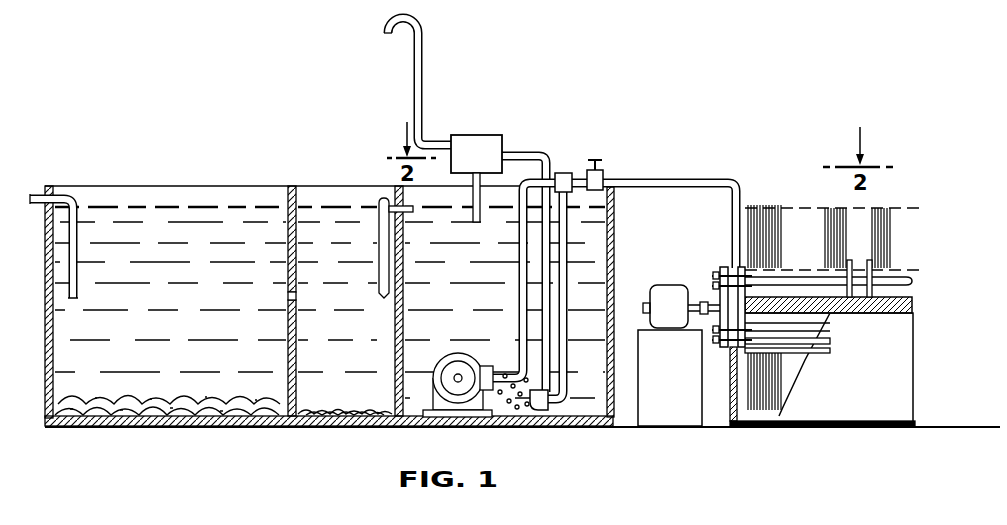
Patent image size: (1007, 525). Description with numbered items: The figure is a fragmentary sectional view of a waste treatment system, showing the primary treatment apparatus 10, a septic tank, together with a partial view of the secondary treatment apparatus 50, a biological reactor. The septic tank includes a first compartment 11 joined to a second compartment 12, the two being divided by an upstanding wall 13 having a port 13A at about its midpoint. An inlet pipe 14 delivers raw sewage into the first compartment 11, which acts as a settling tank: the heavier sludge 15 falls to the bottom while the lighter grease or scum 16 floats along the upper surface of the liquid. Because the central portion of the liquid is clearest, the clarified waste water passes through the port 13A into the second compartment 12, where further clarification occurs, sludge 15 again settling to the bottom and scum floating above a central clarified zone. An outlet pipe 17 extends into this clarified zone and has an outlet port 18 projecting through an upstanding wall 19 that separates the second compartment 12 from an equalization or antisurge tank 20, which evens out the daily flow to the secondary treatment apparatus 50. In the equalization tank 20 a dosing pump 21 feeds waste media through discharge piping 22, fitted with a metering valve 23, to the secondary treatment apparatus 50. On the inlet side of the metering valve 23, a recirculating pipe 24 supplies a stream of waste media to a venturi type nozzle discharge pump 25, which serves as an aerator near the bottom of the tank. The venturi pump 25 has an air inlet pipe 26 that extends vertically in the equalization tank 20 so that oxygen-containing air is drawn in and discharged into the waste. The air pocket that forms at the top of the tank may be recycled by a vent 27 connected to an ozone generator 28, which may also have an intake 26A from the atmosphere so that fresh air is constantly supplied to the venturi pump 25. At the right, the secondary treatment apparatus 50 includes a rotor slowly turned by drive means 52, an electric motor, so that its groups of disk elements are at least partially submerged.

The primary treatment apparatus 10 is at (250, 158).
The first compartment 11 is at (72, 322).
The second compartment 12 is at (345, 208).
The upstanding wall 13 is at (289, 353).
The port 13A is at (289, 316).
The inlet pipe 14 is at (40, 208).
The sludge 15 is at (128, 420).
The scum 16 is at (192, 206).
The outlet pipe 17 is at (385, 205).
The outlet port 18 is at (412, 206).
The upstanding wall 19 is at (395, 356).
The equalization tank 20 is at (465, 309).
The dosing pump 21 is at (445, 365).
The discharge piping 22 is at (520, 330).
The metering valve 23 is at (601, 182).
The recirculating pipe 24 is at (567, 392).
The venturi type nozzle discharge pump 25 is at (545, 410).
The air inlet pipe 26 is at (550, 310).
The intake 26A is at (422, 34).
The vent 27 is at (482, 203).
The ozone generator 28 is at (472, 138).
The secondary treatment apparatus 50 is at (797, 186).
The drive means 52 is at (681, 276).